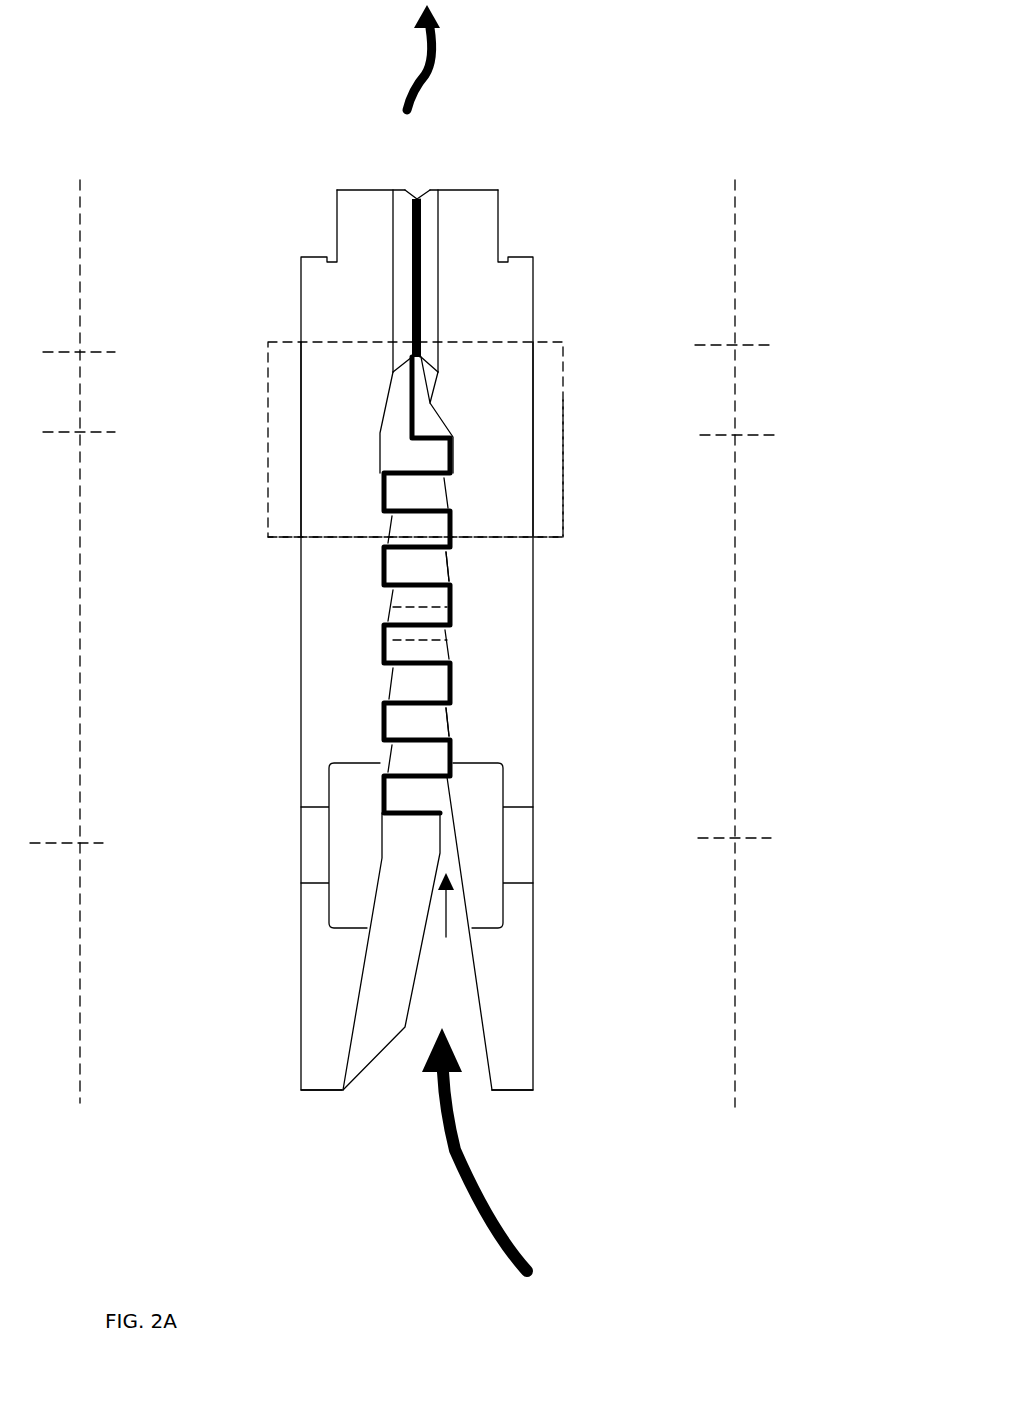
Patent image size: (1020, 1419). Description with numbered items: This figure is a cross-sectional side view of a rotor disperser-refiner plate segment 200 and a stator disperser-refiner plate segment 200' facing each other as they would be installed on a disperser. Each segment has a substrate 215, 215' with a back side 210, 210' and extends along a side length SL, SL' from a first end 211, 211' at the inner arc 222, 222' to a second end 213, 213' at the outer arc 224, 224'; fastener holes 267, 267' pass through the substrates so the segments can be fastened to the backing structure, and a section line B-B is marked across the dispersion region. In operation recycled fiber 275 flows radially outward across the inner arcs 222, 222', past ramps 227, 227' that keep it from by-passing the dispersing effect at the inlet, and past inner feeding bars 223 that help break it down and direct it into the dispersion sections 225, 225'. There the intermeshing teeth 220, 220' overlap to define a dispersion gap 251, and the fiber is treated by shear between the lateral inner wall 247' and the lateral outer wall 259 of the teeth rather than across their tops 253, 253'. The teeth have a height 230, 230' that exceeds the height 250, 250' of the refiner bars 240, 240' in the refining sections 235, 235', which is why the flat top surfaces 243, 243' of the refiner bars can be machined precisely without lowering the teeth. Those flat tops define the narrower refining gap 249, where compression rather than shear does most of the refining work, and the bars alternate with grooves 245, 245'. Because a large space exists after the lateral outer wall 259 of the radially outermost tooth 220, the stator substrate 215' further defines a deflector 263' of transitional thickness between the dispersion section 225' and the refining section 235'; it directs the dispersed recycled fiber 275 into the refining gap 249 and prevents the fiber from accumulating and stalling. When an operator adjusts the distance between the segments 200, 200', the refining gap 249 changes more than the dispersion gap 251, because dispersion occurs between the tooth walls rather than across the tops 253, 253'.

The disperser-refiner plate segment 200 is at (282, 561).
The stator disperser-refiner plate segment 200' is at (551, 561).
The recycled fiber 275 is at (425, 47).
The grooves 245 is at (379, 231).
The grooves 245' is at (470, 230).
The top surface 224 is at (358, 163).
The second top surface 224' is at (493, 166).
The refining gap 249 is at (417, 192).
The first side line 213 is at (100, 298).
The second side line 213' is at (754, 299).
The flat top surface 243 is at (379, 294).
The flat top surface 243' is at (456, 293).
The refining section 235 is at (235, 286).
The refining section 235' is at (626, 261).
The refiner bar 240 is at (369, 370).
The refiner bar 240' is at (463, 335).
The refiner bar height 250 is at (400, 583).
The refiner bar height 250' is at (457, 278).
The body portion 215 is at (256, 439).
The substrate 215' is at (571, 439).
The deflector 263' is at (467, 436).
The back side 210 is at (368, 439).
The second section region 210' is at (587, 468).
The intermeshing teeth 220' is at (456, 618).
The lateral outer wall 259 is at (393, 540).
The section line B-B is at (270, 540).
The dispersion gap 251 is at (388, 583).
The second spring bend 247' is at (481, 571).
The tooth height 230 is at (383, 618).
The tooth height 230' is at (460, 624).
The dispersion section 225 is at (178, 630).
The dispersion section 225' is at (647, 633).
The tops of intermeshing teeth 253 is at (385, 670).
The tops of intermeshing teeth 253' is at (475, 711).
The intermeshing teeth 220 is at (385, 585).
The retention block 267 is at (291, 845).
The second retention block 267' is at (526, 845).
The side length SL is at (109, 641).
The second side line SL' is at (705, 643).
The ramp 227 is at (347, 951).
The ramp 227' is at (491, 933).
The inner feeding bar 223 is at (385, 1010).
The inner arc 222 is at (307, 1129).
The inner arc 222' is at (524, 1131).
The bottom line 211 is at (95, 995).
The second bottom line 211' is at (770, 984).